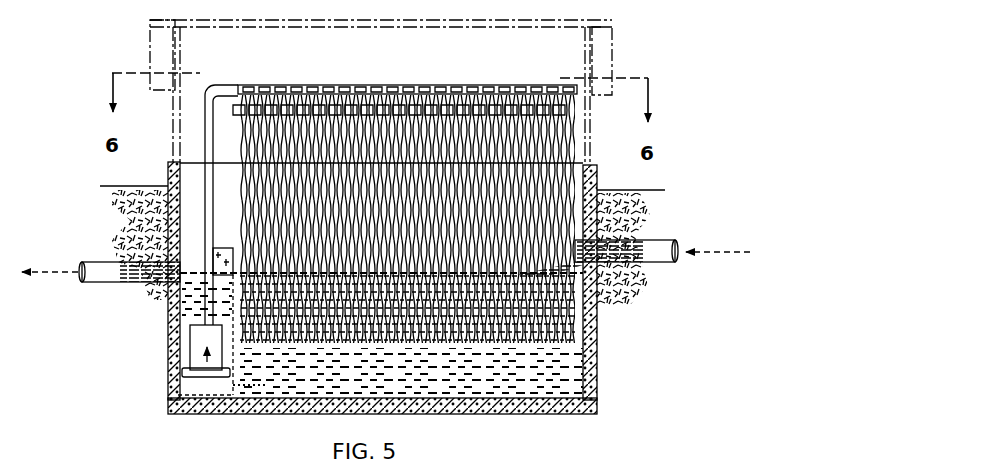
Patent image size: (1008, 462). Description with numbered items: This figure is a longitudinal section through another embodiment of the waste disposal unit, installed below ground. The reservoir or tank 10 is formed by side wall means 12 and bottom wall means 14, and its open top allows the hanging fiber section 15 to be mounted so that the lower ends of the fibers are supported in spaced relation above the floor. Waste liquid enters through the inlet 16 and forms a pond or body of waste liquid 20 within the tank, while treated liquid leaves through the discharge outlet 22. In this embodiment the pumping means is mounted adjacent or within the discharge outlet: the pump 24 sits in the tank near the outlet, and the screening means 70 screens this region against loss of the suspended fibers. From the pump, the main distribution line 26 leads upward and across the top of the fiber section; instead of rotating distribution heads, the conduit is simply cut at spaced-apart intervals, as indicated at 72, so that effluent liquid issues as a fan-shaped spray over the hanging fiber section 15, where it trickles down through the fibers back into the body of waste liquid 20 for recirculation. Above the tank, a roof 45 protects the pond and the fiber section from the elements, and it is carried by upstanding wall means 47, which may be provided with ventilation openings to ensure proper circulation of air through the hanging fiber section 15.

The reservoir or tank 10 is at (160, 410).
The side wall means 12 is at (169, 178).
The bottom wall means 14 is at (517, 416).
The hanging fiber section 15 is at (563, 191).
The inlet 16 is at (650, 248).
The body of waste liquid 20 is at (566, 385).
The discharge outlet 22 is at (98, 266).
The pump 24 is at (191, 338).
The main distribution line 26 is at (207, 130).
The roof 45 is at (612, 56).
The upstanding wall means 47 is at (186, 66).
The screening means 70 is at (236, 258).
The cuts in main distribution conduit 72 is at (458, 84).